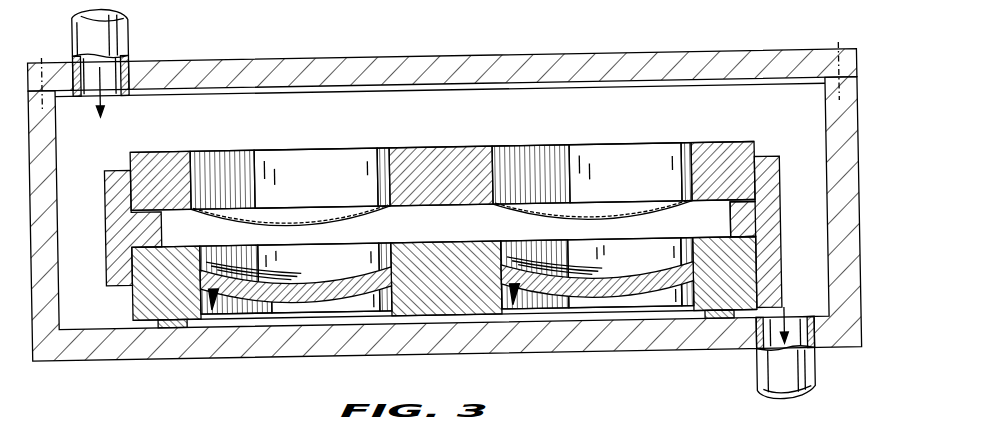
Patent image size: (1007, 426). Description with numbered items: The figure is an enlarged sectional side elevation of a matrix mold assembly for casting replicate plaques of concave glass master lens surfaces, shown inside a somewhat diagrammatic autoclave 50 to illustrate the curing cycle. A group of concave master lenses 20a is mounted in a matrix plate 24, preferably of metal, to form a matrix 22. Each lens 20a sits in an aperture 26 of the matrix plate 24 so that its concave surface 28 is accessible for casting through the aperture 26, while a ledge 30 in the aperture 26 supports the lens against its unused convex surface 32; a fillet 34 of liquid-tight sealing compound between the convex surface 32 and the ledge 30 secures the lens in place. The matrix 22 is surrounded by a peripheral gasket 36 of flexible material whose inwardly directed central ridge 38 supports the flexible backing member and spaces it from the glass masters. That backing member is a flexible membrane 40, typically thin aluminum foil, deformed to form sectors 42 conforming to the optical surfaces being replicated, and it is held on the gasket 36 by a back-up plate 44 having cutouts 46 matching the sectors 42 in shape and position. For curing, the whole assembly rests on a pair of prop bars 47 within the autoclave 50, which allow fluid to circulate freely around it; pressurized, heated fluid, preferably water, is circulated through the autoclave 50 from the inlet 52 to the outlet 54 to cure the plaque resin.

The master lens 20a is at (296, 301).
The matrix 22 is at (766, 290).
The matrix plate 24 is at (141, 288).
The aperture 26 is at (221, 246).
The concave surface 28 is at (296, 281).
The ledge 30 is at (200, 286).
The convex surface 32 is at (325, 301).
The fillet 34 is at (207, 289).
The peripheral gasket 36 is at (772, 184).
The central ridge 38 is at (730, 225).
The flexible membrane 40 is at (152, 190).
The sector 42 is at (283, 219).
The back-up plate 44 is at (713, 157).
The cutout 46 is at (284, 157).
The bar 47 is at (166, 327).
The autoclave 50 is at (675, 57).
The inlet 52 is at (132, 30).
The outlet 54 is at (812, 373).